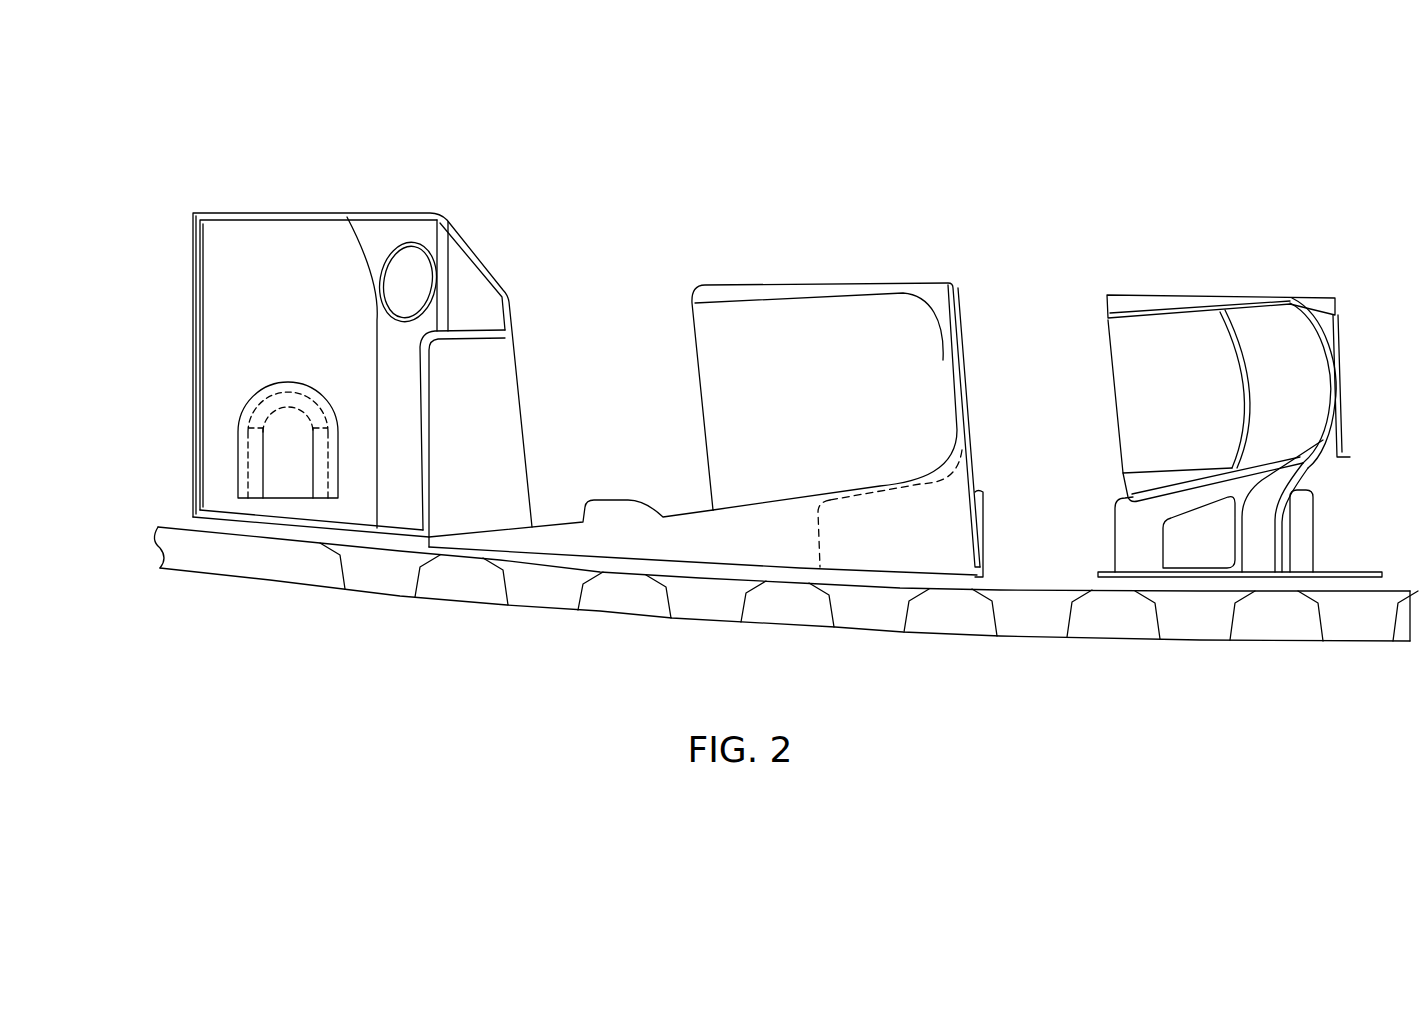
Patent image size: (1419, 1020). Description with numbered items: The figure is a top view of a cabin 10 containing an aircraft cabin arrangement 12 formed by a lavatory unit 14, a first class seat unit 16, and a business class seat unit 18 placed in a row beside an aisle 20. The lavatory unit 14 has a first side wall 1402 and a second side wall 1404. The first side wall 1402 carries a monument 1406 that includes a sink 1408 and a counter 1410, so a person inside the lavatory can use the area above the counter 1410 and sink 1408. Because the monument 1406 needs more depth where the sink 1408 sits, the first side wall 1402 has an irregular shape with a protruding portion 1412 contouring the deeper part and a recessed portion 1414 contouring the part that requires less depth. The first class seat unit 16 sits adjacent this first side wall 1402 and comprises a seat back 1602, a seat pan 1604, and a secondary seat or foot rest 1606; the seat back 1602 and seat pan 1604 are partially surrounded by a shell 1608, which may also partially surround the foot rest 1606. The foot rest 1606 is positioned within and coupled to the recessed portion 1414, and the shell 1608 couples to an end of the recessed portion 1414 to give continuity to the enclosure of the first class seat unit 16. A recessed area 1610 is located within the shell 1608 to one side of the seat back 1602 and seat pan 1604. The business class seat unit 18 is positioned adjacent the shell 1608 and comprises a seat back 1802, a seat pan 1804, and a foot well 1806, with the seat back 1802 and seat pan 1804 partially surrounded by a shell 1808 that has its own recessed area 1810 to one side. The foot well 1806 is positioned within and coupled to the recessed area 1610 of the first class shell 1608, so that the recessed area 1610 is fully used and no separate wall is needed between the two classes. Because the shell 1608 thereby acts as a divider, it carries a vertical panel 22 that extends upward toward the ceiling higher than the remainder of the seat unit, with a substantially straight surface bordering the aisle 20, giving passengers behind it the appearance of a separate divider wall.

The cabin 10 is at (176, 549).
The aircraft cabin arrangement 12 is at (1194, 668).
The lavatory unit 14 is at (290, 213).
The first side wall 1402 is at (415, 437).
The second side wall 1404 is at (195, 367).
The monument 1406 is at (383, 370).
The sink 1408 is at (407, 257).
The counter 1410 is at (395, 437).
The protruding portion 1412 is at (473, 265).
The recessed portion 1414 is at (420, 468).
The first class seat unit 16 is at (760, 560).
The seat back 1602 is at (945, 360).
The seat pan 1604 is at (793, 375).
The foot rest 1606 is at (513, 485).
The shell 1608 is at (698, 550).
The recessed area 1610 is at (883, 560).
The foot well 1806 is at (937, 560).
The vertical panel 22 is at (980, 528).
The business class seat unit 18 is at (1317, 407).
The aisle 20 is at (1195, 262).
The seat back 1802 is at (1325, 367).
The seat pan 1804 is at (1203, 429).
The shell 1808 is at (1267, 540).
The recessed area 1810 is at (1232, 557).